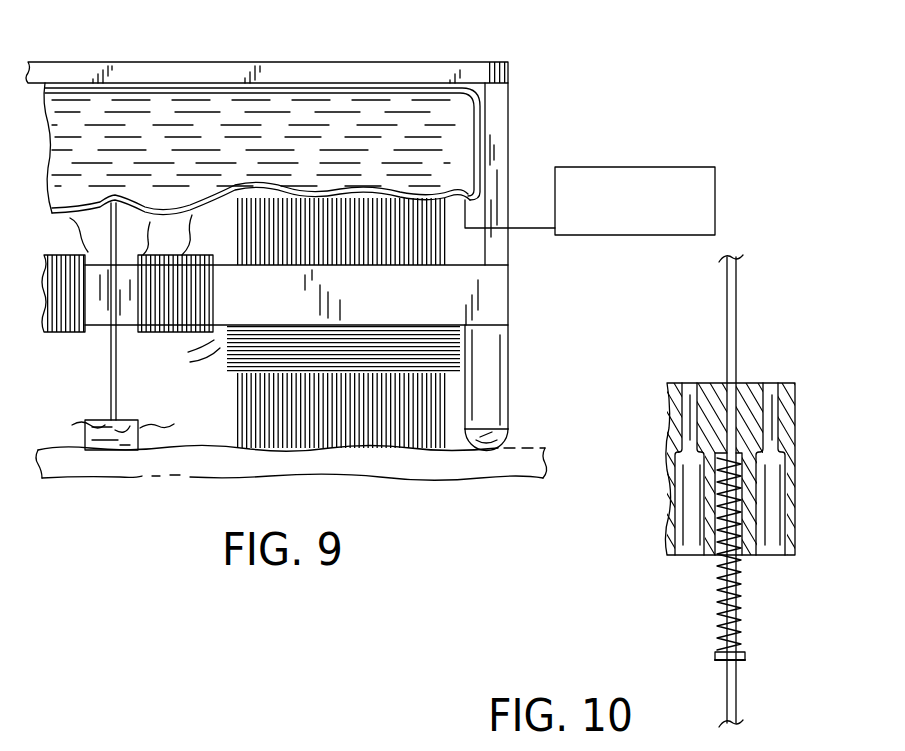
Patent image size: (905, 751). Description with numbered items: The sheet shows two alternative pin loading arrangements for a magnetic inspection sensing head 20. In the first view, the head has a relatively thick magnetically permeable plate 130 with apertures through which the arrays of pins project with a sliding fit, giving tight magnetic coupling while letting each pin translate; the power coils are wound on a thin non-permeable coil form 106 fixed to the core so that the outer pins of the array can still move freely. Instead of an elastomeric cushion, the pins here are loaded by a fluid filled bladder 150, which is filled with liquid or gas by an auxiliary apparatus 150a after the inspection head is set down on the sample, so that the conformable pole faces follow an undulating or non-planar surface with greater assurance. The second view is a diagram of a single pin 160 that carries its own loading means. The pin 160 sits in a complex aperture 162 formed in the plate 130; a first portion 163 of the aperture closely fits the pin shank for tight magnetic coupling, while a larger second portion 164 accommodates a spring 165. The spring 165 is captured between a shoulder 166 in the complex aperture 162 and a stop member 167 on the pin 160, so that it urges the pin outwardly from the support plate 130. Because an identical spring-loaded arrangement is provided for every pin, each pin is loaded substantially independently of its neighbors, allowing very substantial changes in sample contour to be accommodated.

In FIG. 9, the sensing head 20 is at (557, 97).
In FIG. 9, the fluid filled bladder 150 is at (383, 105).
In FIG. 9, the auxiliary apparatus 150a is at (682, 167).
In FIG. 9, the coil form 106 is at (460, 345).
In FIG. 10, the magnetically permeable plate 130 is at (673, 383).
In FIG. 10, the complex aperture 162 is at (738, 381).
In FIG. 10, the first portion 163 is at (757, 385).
In FIG. 10, the second portion 164 is at (753, 537).
In FIG. 10, the spring 165 is at (727, 577).
In FIG. 10, the shoulder 166 is at (687, 440).
In FIG. 10, the pin 160 is at (720, 663).
In FIG. 10, the stop member 167 is at (745, 657).